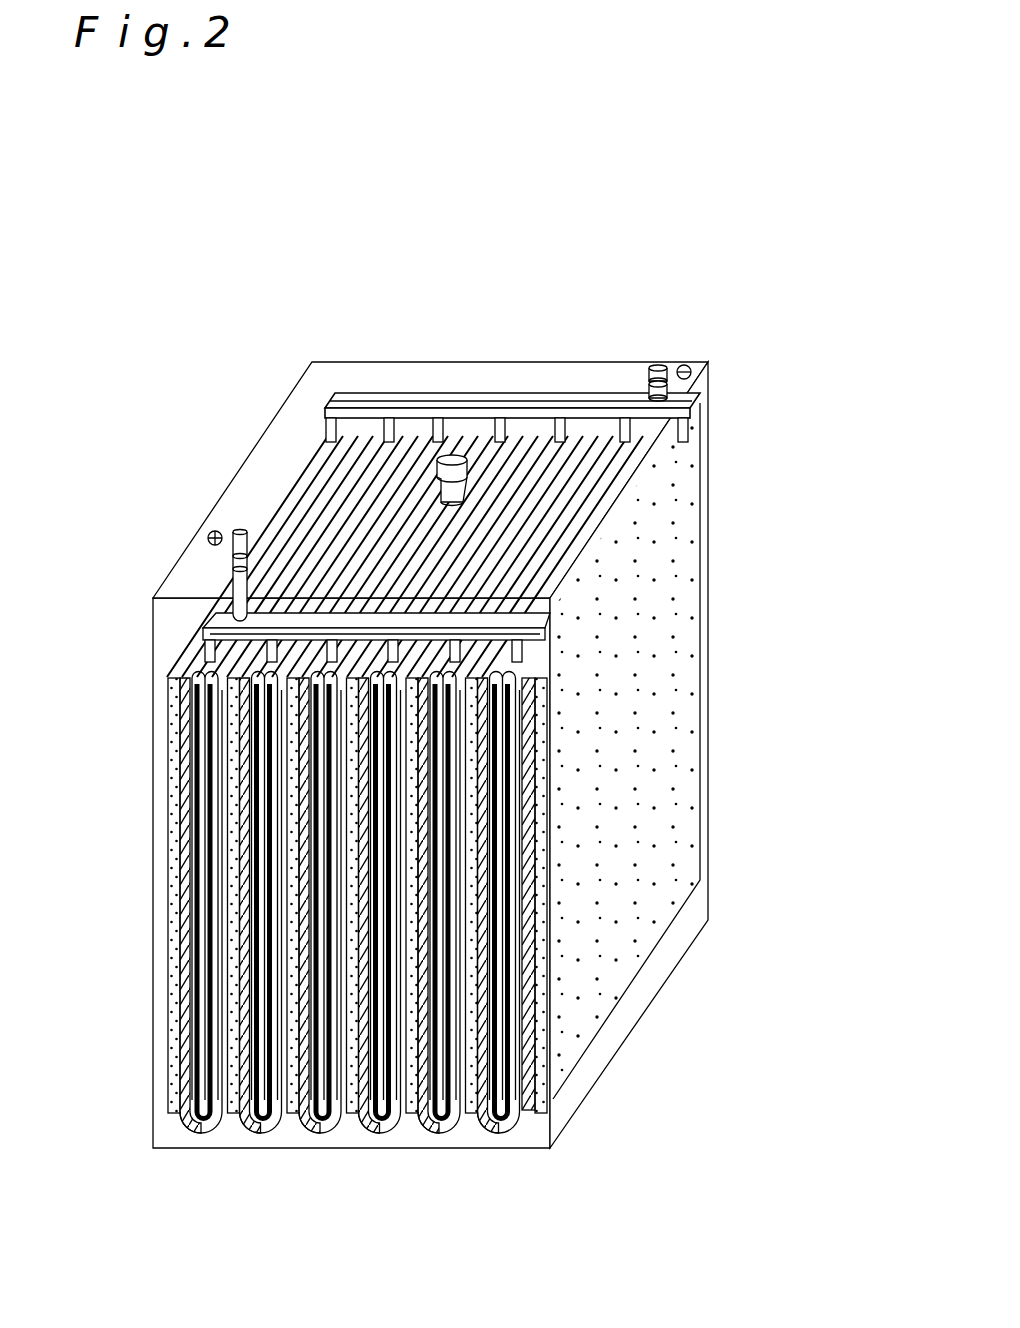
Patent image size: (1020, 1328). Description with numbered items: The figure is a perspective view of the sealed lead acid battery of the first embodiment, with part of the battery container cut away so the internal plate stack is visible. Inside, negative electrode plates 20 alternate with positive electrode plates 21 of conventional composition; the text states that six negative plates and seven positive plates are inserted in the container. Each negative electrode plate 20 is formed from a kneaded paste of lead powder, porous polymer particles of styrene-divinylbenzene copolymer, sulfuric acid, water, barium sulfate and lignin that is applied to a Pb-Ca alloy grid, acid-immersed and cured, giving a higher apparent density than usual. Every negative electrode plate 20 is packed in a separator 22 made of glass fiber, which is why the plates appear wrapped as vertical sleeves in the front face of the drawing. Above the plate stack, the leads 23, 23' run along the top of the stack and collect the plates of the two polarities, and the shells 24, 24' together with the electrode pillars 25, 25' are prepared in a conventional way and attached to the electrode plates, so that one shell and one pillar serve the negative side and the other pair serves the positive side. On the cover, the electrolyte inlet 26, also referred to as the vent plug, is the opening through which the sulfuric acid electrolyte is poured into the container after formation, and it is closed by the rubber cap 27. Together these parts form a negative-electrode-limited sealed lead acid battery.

The negative electrode plate 20 is at (527, 1062).
The positive electrode plate 21 is at (488, 1130).
The separator 22 is at (527, 1134).
The lead 23 is at (514, 631).
The lead 23' is at (583, 386).
The shell 24 is at (295, 635).
The shell 24' is at (509, 355).
The electrode pillar 25 is at (197, 522).
The electrode pillar 25' is at (687, 334).
The electrolyte inlet 26 is at (467, 484).
The rubber cap 27 is at (452, 455).